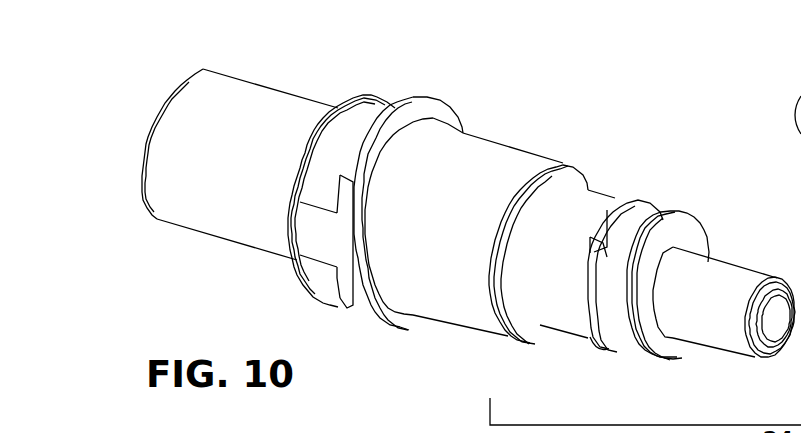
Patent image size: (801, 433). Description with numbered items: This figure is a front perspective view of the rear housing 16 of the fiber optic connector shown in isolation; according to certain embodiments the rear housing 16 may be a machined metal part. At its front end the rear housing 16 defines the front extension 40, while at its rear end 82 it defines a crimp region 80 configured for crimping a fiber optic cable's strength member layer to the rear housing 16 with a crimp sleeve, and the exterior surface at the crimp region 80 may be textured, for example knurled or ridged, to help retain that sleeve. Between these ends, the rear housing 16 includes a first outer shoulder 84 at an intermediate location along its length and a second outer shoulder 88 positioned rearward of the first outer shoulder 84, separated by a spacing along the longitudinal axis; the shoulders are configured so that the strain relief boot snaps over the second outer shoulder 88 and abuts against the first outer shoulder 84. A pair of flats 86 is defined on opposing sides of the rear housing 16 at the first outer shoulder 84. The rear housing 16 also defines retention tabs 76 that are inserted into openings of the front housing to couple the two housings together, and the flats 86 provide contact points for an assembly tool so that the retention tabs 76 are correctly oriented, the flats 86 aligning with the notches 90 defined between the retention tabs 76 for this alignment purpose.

The rear housing 16 is at (381, 343).
The front extension 40 is at (717, 335).
The retention tabs 76 is at (638, 200).
The crimp region 80 is at (284, 93).
The rear end 82 is at (140, 165).
The first outer shoulder 84 is at (428, 95).
The flats 86 is at (342, 233).
The second outer shoulder 88 is at (304, 284).
The notches 90 is at (592, 283).